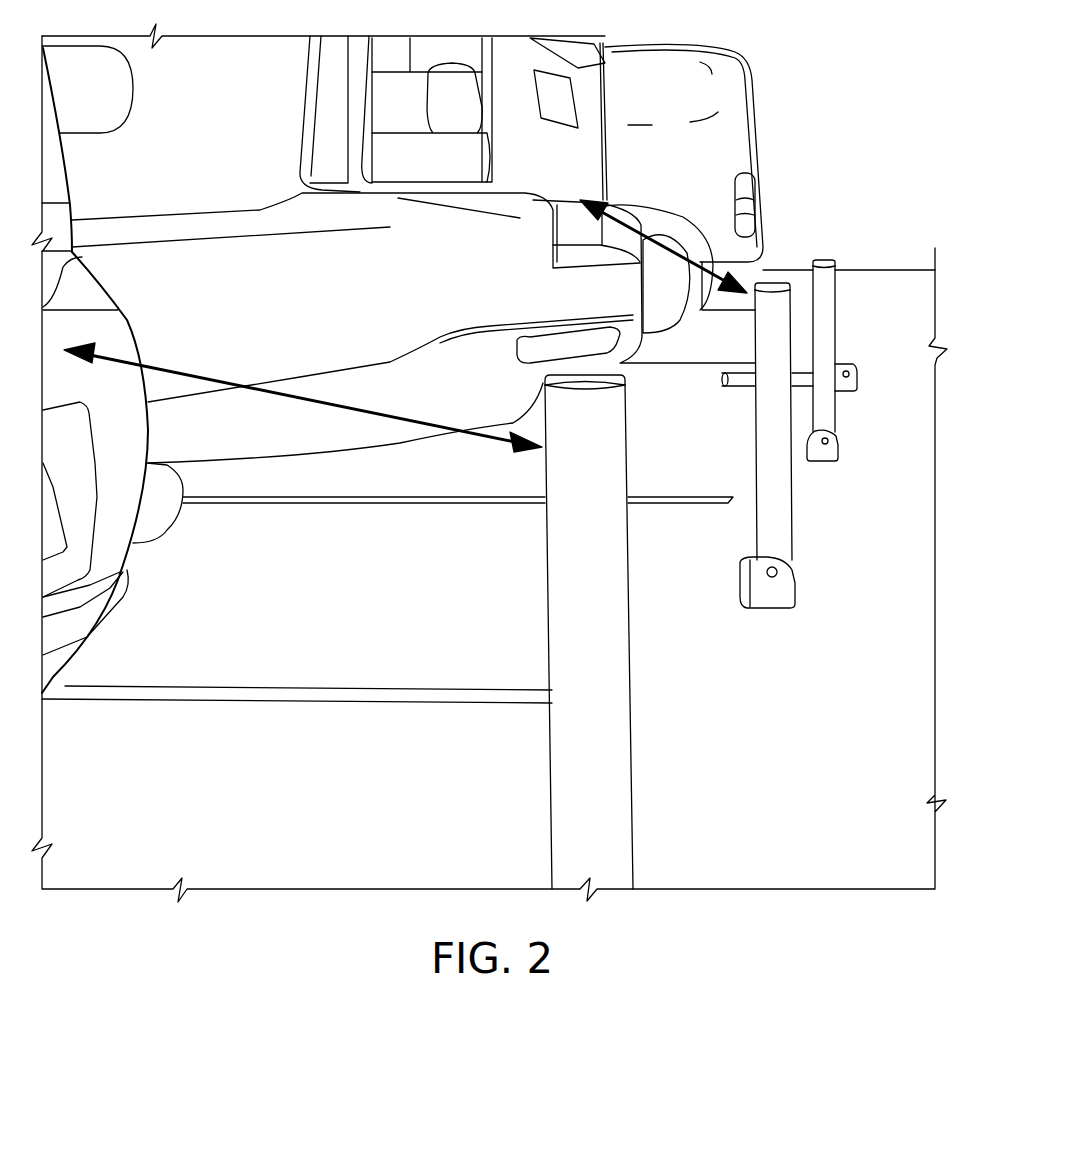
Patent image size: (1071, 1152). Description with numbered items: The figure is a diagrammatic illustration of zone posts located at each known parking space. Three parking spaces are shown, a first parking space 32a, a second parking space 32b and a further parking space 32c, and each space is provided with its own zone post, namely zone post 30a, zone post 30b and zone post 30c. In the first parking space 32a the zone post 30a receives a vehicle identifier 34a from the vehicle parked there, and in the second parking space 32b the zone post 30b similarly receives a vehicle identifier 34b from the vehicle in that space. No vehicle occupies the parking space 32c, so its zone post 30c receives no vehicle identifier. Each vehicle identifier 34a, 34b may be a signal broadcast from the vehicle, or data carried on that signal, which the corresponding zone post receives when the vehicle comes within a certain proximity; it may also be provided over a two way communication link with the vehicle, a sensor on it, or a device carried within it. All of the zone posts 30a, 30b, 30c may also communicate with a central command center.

The zone post 30a is at (629, 673).
The zone post 30b is at (791, 485).
The zone post 30c is at (836, 342).
The first parking space 32a is at (176, 823).
The second parking space 32b is at (328, 605).
The parking space 32c is at (653, 442).
The vehicle identifier 34a is at (462, 433).
The vehicle identifier 34b is at (710, 250).